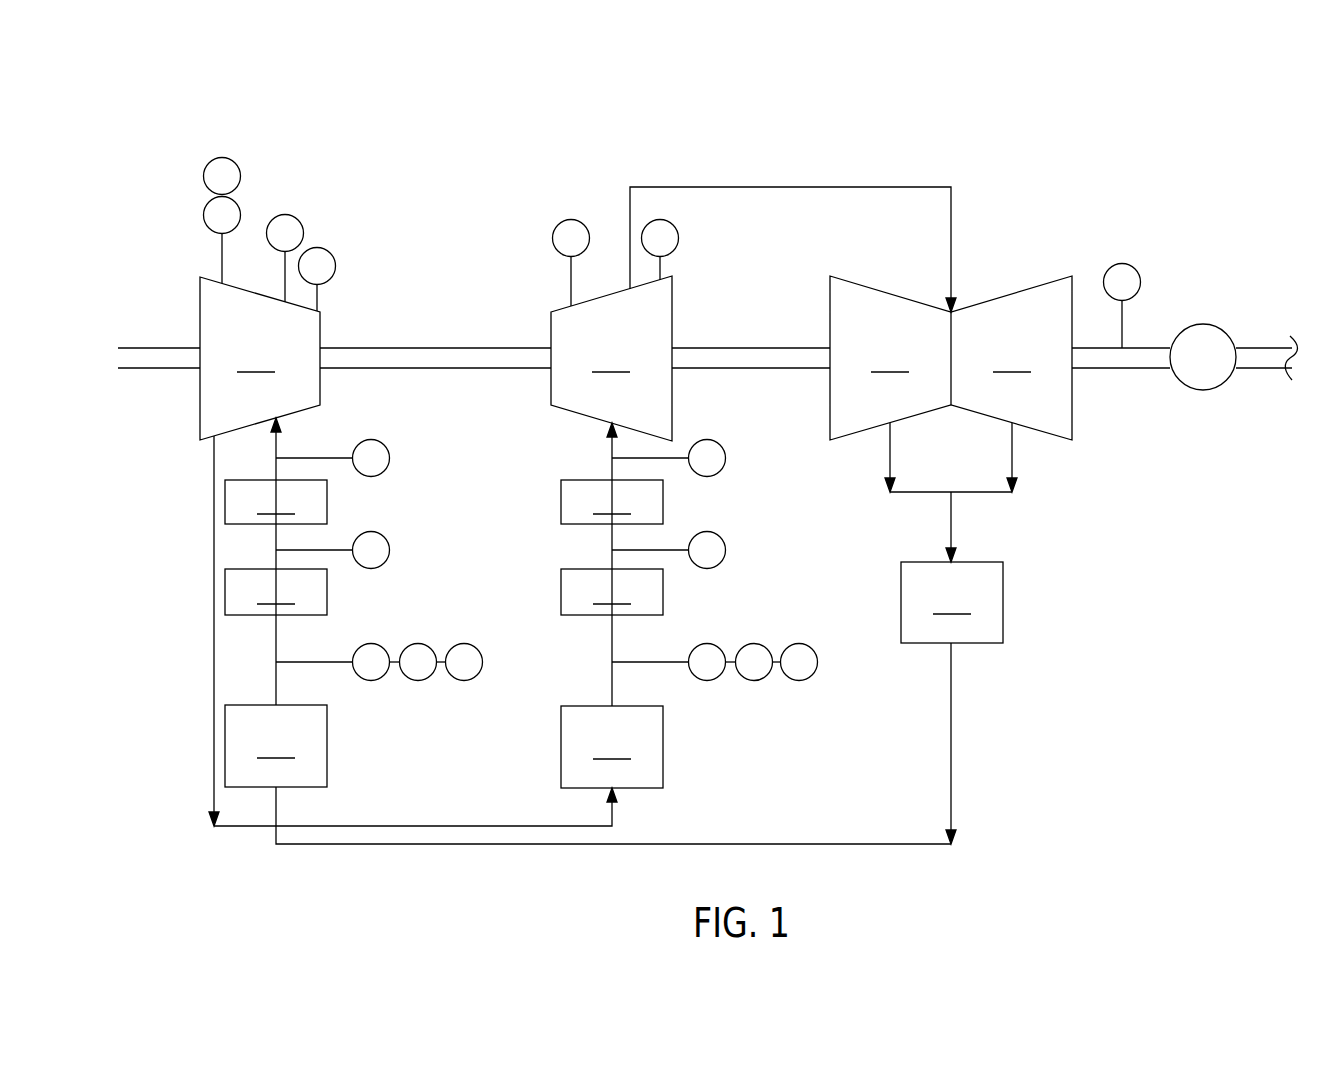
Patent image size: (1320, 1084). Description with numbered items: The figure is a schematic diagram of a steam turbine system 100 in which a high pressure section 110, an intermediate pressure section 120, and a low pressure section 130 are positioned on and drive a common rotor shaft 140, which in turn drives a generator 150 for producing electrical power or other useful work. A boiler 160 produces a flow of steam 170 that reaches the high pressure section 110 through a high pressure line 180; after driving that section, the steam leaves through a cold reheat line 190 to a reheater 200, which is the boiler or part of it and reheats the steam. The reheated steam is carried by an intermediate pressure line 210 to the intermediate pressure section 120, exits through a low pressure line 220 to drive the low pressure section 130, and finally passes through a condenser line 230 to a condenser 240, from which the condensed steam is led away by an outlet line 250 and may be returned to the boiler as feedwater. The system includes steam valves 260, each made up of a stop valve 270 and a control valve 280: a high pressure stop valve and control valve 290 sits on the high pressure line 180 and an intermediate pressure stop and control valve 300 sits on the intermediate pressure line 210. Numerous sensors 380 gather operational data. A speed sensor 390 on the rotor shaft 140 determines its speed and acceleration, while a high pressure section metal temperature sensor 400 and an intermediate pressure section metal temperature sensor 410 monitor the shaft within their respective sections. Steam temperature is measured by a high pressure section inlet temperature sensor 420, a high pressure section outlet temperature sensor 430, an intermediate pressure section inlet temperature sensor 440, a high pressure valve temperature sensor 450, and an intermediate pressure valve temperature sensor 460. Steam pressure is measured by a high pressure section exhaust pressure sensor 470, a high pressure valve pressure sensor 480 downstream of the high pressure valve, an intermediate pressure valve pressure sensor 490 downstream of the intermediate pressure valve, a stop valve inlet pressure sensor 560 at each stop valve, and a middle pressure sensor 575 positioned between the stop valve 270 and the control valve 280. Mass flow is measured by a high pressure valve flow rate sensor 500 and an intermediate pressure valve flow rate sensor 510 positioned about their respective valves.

The steam turbine system 100 is at (1104, 97).
The high pressure section 110 is at (260, 358).
The intermediate pressure section 120 is at (611, 358).
The low pressure section 130 is at (951, 358).
The rotor shaft 140 is at (393, 348).
The generator 150 is at (1206, 325).
The boiler 160 is at (276, 746).
The flow of steam 170 is at (276, 679).
The high pressure line 180 is at (276, 638).
The cold reheat line 190 is at (214, 671).
The reheater 200 is at (612, 747).
The intermediate pressure line 210 is at (612, 638).
The low pressure line 220 is at (790, 187).
The condenser line 230 is at (951, 528).
The condenser 240 is at (952, 602).
The exhaust outlet line 250 is at (951, 723).
The steam valves 260 is at (212, 501).
The stop valve 270 is at (444, 592).
The control valve 280 is at (444, 502).
The high pressure stop valve and control valve 290 is at (340, 501).
The intermediate pressure stop and control valve 300 is at (676, 501).
The sensors 380 is at (1153, 272).
The speed sensor 390 is at (1126, 264).
The high pressure section metal temperature sensor 400 is at (323, 249).
The intermediate pressure section metal temperature sensor 410 is at (679, 238).
The high pressure section inlet temperature sensor 420 is at (290, 216).
The high pressure section outlet temperature sensor 430 is at (229, 160).
The intermediate pressure section inlet temperature sensor 440 is at (552, 238).
The high pressure valve temperature sensor 450 is at (378, 645).
The intermediate pressure valve temperature sensor 460 is at (714, 645).
The high pressure section exhaust pressure sensor 470 is at (203, 215).
The high pressure valve pressure sensor 480 is at (378, 441).
The intermediate pressure valve pressure sensor 490 is at (714, 441).
The high pressure valve flow rate sensor 500 is at (471, 645).
The intermediate pressure valve flow rate sensor 510 is at (806, 645).
The fuel pressure sensor 560 is at (425, 679).
The middle pressure sensor 575 is at (390, 550).